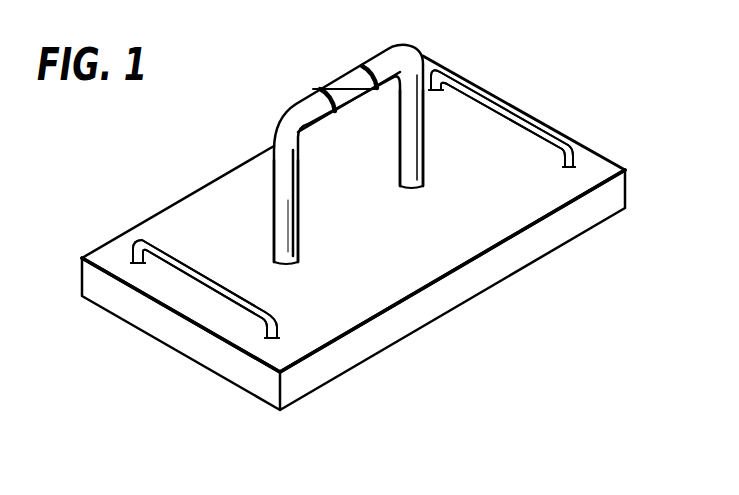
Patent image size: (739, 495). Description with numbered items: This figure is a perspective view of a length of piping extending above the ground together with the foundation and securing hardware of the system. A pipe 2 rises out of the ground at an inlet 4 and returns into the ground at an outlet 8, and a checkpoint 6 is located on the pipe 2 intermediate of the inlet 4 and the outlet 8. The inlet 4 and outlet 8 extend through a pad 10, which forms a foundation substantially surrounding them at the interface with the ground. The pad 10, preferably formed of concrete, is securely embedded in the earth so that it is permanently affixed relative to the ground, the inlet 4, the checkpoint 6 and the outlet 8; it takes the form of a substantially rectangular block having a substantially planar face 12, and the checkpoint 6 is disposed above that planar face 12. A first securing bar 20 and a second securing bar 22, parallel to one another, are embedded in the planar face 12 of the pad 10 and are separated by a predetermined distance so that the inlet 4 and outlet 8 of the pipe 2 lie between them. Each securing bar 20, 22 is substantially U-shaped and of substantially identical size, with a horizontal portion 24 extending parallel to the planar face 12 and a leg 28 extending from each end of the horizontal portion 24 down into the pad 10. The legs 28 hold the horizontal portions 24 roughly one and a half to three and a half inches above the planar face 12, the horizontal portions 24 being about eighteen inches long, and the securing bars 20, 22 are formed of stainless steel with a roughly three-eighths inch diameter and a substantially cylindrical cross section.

The pipe 2 is at (390, 48).
The inlet 4 is at (423, 187).
The checkpoint 6 is at (340, 98).
The outlet 8 is at (282, 261).
The pad 10 is at (590, 217).
The planar face 12 is at (358, 303).
The first securing bar 20 is at (162, 238).
The second securing bar 22 is at (541, 108).
The horizontal portion 24 is at (194, 262).
The leg 28 is at (137, 263).